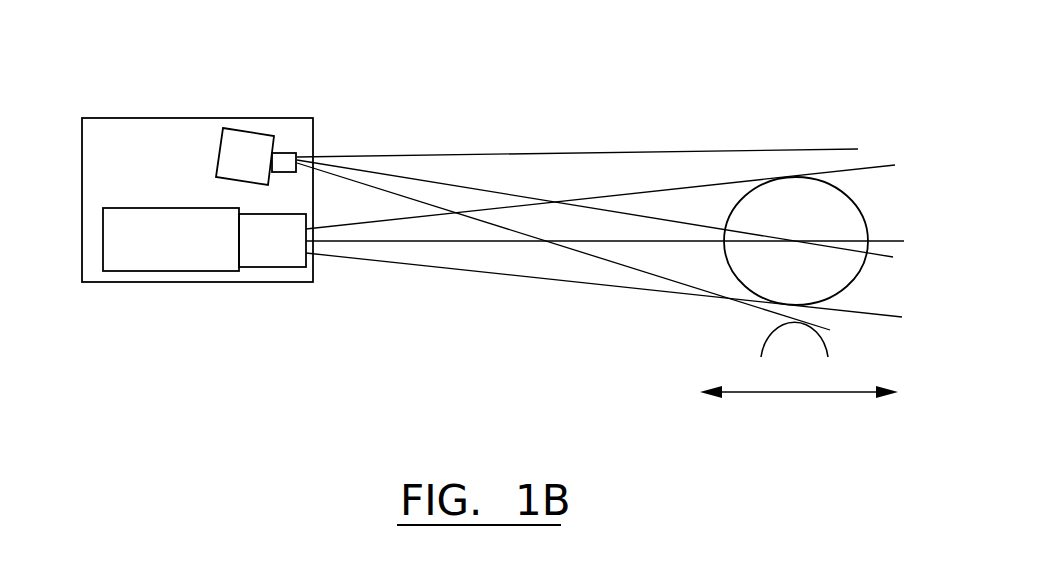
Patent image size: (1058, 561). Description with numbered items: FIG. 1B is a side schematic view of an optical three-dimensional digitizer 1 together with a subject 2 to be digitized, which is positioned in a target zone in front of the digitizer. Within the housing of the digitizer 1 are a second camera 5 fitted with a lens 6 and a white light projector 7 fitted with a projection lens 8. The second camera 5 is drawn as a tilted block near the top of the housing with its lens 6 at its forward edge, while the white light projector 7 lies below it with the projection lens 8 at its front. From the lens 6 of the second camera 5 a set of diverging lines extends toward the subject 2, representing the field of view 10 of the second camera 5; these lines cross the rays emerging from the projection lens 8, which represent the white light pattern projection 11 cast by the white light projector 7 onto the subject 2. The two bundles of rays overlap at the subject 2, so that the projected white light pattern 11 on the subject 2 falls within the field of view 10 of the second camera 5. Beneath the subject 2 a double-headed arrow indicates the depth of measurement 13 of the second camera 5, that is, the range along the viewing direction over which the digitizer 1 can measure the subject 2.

The optical 3D digitizer 1 is at (110, 118).
The subject 2 is at (867, 215).
The second camera 5 is at (237, 137).
The lens 6 is at (284, 156).
The white light projector 7 is at (173, 263).
The projection lens 8 is at (262, 255).
The field of view 10 is at (443, 176).
The white light pattern projection 11 is at (375, 253).
The depth of measurement 13 is at (798, 393).